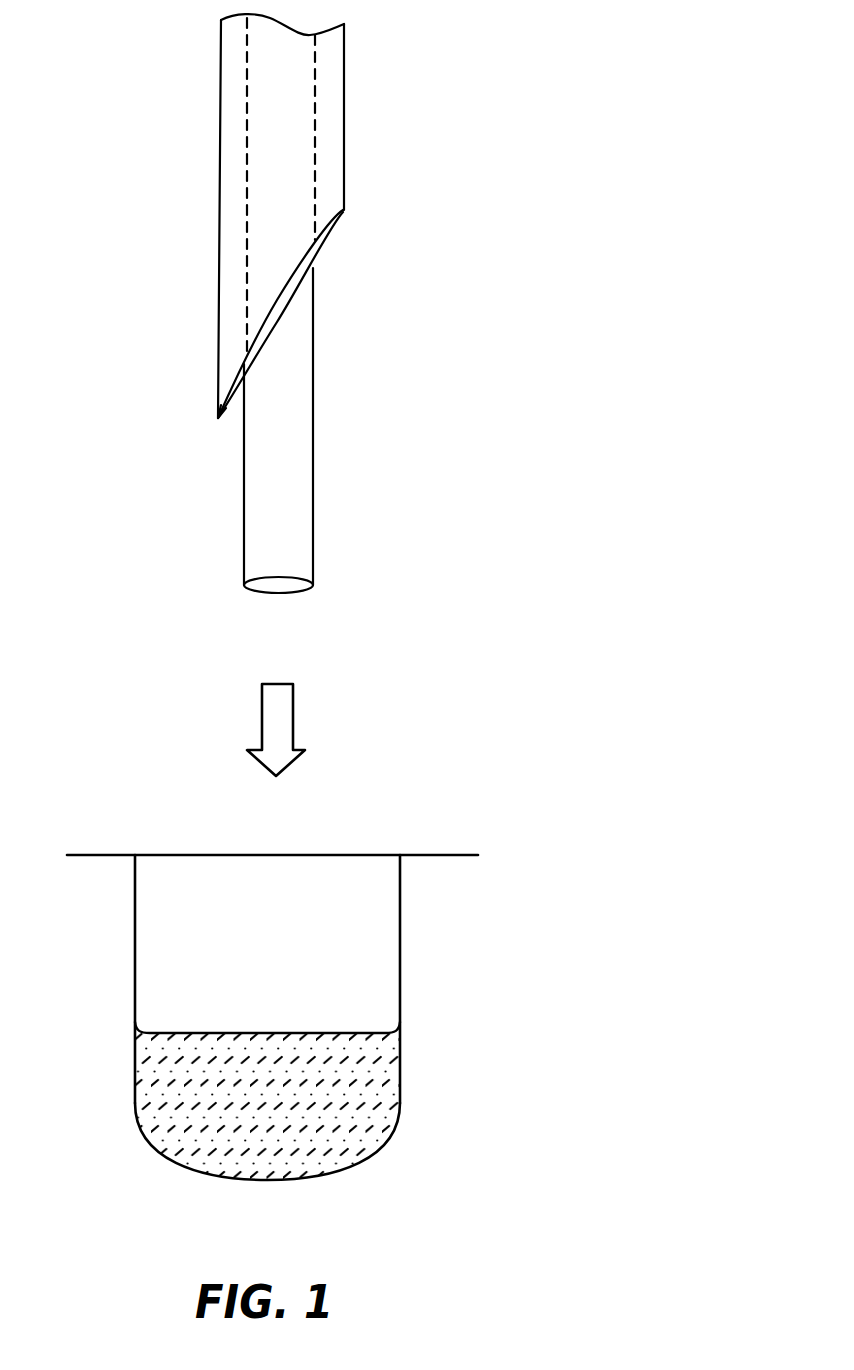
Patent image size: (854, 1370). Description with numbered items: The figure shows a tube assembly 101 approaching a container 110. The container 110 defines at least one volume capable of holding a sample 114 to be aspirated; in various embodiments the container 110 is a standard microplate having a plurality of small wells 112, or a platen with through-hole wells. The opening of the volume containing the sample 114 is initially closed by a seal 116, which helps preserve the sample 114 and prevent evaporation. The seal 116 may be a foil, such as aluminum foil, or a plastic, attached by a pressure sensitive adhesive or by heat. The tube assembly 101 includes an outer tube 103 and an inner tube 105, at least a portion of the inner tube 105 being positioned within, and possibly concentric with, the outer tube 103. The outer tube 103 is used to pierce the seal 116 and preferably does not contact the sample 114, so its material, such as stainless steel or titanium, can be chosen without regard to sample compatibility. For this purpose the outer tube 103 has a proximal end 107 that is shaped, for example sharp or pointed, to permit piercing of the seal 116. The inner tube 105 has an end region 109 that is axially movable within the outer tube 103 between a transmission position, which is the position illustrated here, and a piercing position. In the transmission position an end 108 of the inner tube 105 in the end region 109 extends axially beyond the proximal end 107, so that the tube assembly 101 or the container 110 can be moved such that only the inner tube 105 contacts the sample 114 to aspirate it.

The tube assembly 101 is at (257, 313).
The outer tube 103 is at (331, 155).
The inner tube 105 is at (293, 445).
The proximal end 107 is at (218, 410).
The end 108 is at (250, 592).
The end region 109 is at (355, 276).
The container 110 is at (296, 991).
The wells 112 is at (128, 1157).
The sample 114 is at (333, 1068).
The seal 116 is at (200, 855).